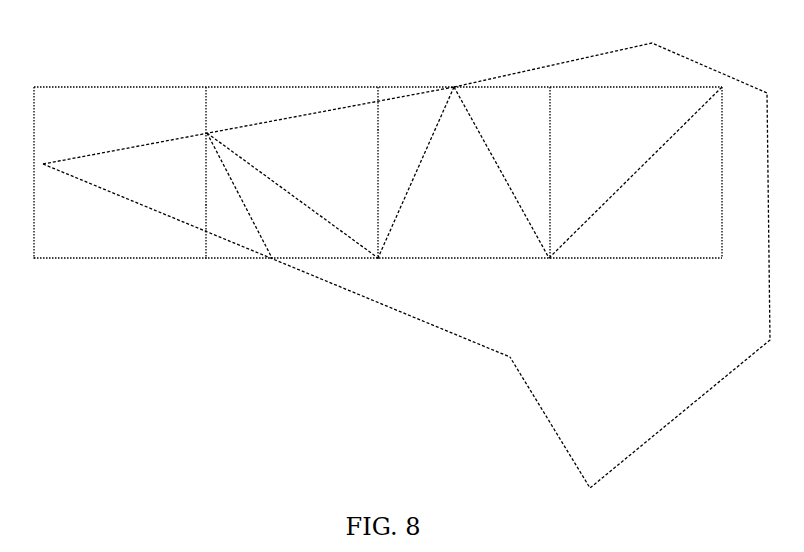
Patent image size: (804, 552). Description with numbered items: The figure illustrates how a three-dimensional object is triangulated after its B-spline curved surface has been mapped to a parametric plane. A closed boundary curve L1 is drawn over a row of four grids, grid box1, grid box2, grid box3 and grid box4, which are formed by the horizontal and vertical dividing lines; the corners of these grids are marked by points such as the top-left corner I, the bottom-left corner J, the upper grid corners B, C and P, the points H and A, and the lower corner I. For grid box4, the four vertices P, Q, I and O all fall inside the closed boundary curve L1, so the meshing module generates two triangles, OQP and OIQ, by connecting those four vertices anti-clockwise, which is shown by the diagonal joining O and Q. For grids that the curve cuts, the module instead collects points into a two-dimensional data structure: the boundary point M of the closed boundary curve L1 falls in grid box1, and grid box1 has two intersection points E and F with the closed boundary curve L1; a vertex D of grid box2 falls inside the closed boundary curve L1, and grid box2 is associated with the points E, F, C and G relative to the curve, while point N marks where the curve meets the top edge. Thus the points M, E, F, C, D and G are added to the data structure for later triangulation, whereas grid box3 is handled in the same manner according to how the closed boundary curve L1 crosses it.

The vertex I is at (370, 172).
The corner point J is at (365, 194).
The point B (box1/box2 top boundary) B is at (189, 152).
The intersection point C is at (393, 152).
The vertex P is at (531, 172).
The boundary point M is at (248, 126).
The point N is at (463, 143).
The intersection point E is at (292, 192).
The vertex O is at (621, 197).
The vertex Q is at (612, 265).
The point H is at (395, 129).
The intersection point F is at (190, 201).
The point A is at (196, 261).
The intersection point G is at (263, 281).
The vertex D is at (396, 267).
The closed boundary curve L1 is at (414, 321).
The grid box1 is at (67, 246).
The grid box2 is at (288, 246).
The box3 region box3 is at (463, 246).
The grid box4 is at (633, 246).